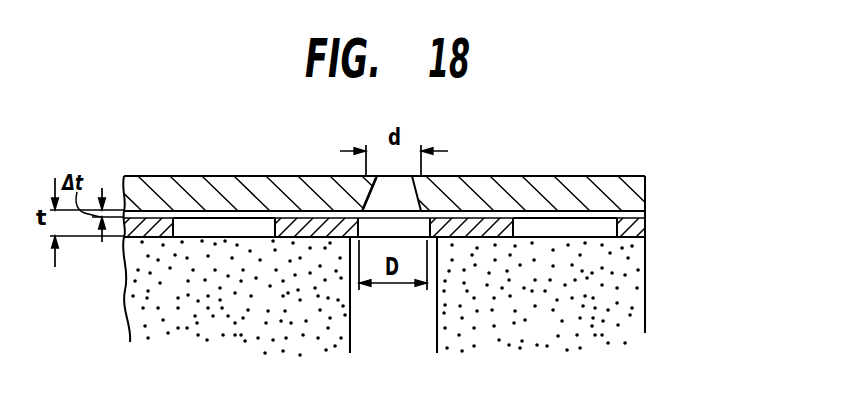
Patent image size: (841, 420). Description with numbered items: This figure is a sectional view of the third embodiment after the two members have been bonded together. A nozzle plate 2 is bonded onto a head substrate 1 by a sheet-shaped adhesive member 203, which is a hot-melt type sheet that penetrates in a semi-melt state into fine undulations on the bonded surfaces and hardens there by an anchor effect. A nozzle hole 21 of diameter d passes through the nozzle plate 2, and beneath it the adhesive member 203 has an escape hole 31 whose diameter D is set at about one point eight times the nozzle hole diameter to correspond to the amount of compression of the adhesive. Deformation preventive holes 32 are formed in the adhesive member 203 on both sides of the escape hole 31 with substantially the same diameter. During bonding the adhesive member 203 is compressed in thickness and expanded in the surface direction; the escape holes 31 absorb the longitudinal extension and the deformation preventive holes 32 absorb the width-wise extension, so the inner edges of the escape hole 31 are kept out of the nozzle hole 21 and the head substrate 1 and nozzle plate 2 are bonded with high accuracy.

The head substrate 1 is at (596, 255).
The nozzle plate 2 is at (577, 186).
The nozzle hole 21 is at (408, 200).
The escape hole 31 is at (364, 210).
The deformation preventive hole 32 is at (243, 229).
The sheet-shaped adhesive member 203 is at (497, 237).